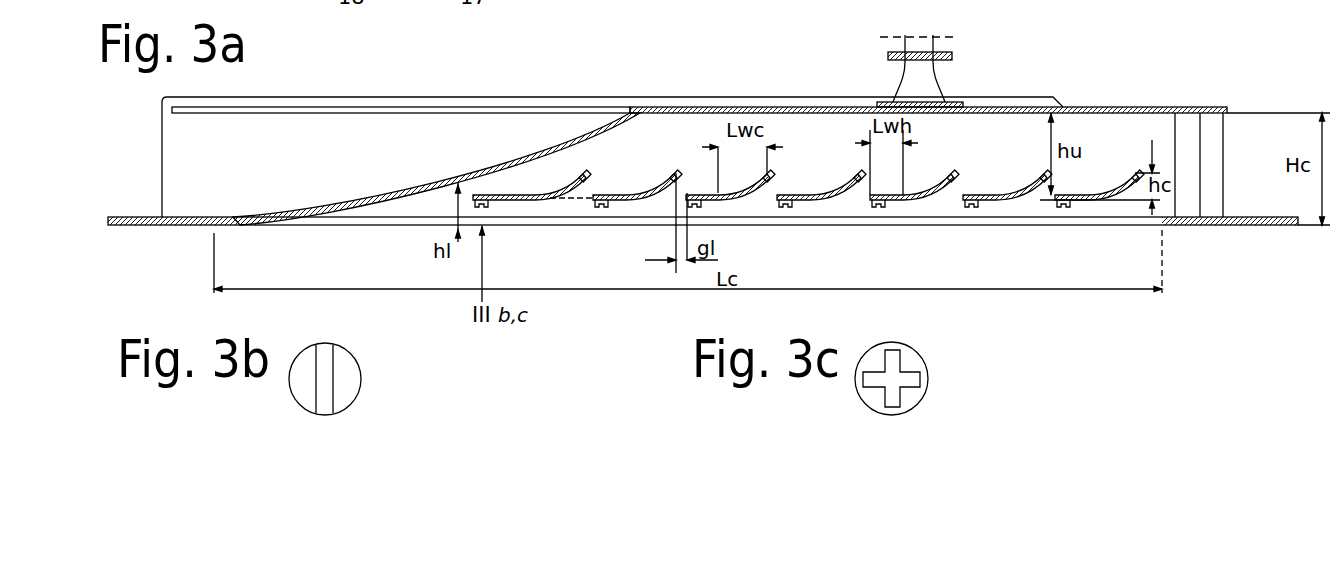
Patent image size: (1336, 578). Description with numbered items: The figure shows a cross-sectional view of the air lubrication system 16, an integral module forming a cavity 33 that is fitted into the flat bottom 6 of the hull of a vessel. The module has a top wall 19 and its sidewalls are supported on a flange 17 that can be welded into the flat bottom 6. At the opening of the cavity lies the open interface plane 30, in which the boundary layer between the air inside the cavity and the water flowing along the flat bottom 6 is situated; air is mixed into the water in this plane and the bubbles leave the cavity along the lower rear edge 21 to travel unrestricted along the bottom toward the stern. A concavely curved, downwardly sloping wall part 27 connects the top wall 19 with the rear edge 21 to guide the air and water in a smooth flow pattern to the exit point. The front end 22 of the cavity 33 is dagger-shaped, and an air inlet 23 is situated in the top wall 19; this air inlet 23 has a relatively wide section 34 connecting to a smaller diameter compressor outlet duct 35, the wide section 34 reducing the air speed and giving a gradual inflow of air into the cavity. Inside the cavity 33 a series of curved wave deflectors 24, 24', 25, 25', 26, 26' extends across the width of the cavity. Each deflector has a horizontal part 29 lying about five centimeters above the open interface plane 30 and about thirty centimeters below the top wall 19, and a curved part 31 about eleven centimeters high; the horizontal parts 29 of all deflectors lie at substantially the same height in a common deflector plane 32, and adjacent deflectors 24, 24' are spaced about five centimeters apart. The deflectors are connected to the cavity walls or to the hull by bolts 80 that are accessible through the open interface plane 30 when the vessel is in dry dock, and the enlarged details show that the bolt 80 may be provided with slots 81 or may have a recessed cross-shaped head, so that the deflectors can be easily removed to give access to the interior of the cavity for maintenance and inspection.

In FIG. 3A, the bottom 6 is at (122, 218).
In FIG. 3A, the air lubrication system 16 is at (408, 92).
In FIG. 3A, the flange 17 is at (1270, 228).
In FIG. 3A, the top wall 19 is at (792, 107).
In FIG. 3A, the rear edge 21 is at (218, 226).
In FIG. 3A, the front end 22 is at (1223, 143).
In FIG. 3A, the air inlet 23 is at (933, 35).
In FIG. 3A, the wave deflector 24 is at (533, 218).
In FIG. 3A, the wave deflector 24' is at (628, 218).
In FIG. 3A, the wave deflector 25 is at (728, 219).
In FIG. 3A, the wave deflector 25' is at (819, 219).
In FIG. 3A, the wave deflector 26 is at (912, 218).
In FIG. 3A, the wave deflector 26' is at (1005, 218).
In FIG. 3A, the curved wall part 27 is at (483, 172).
In FIG. 3A, the horizontal part 29 is at (620, 194).
In FIG. 3A, the open interface plane 30 is at (393, 228).
In FIG. 3A, the curved part 31 is at (660, 186).
In FIG. 3A, the deflector plane 32 is at (568, 203).
In FIG. 3A, the cavity 33 is at (1097, 140).
In FIG. 3A, the wide section 34 is at (947, 90).
In FIG. 3A, the compressor outlet duct 35 is at (900, 50).
In FIG. 3A, the bolt 80 is at (578, 183).
In FIG. 3B, the bolt 80 is at (347, 372).
In FIG. 3C, the bolt 80 is at (915, 363).
In FIG. 3A, the slot wall 81 is at (584, 182).
In FIG. 3B, the slot wall 81 is at (330, 392).